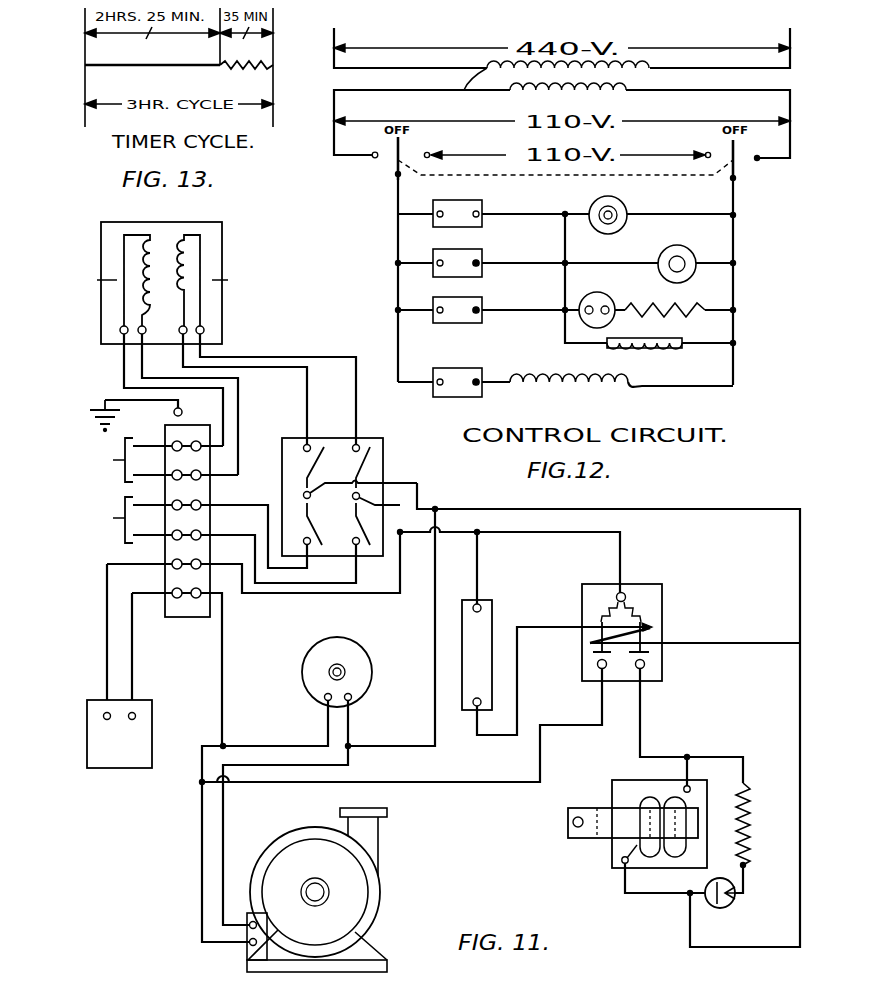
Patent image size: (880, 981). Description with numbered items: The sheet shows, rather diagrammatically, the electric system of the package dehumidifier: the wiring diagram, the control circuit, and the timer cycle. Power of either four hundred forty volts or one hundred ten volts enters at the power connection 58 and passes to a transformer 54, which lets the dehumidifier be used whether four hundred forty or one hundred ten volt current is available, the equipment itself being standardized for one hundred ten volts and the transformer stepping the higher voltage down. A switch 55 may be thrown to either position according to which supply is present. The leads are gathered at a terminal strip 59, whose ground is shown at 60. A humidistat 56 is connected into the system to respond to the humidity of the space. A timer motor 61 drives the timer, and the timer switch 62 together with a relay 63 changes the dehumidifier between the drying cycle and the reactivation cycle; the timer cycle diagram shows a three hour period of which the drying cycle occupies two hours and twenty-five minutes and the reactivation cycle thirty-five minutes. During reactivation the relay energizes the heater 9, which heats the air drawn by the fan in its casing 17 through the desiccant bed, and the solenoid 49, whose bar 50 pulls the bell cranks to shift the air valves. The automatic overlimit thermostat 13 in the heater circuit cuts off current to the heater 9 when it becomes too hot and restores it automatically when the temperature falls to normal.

In FIG. 12, the heater 9 is at (706, 312).
In FIG. 11, the heater 9 is at (746, 785).
In FIG. 12, the automatic overlimit thermostat 13 is at (609, 298).
In FIG. 11, the automatic overlimit thermostat 13 is at (708, 904).
In FIG. 12, the casing 17 is at (692, 252).
In FIG. 11, the casing 17 is at (368, 876).
In FIG. 12, the solenoid 49 is at (653, 350).
In FIG. 11, the solenoid 49 is at (645, 800).
In FIG. 12, the bar 50 is at (684, 340).
In FIG. 11, the bar 50 is at (610, 818).
In FIG. 12, the transformer 54 is at (520, 96).
In FIG. 11, the transformer 54 is at (213, 229).
In FIG. 12, the switch 55 is at (375, 160).
In FIG. 11, the switch 55 is at (366, 470).
In FIG. 12, the humidistat 56 is at (484, 208).
In FIG. 11, the humidistat 56 is at (97, 756).
In FIG. 11, the power connection 58 is at (47, 462).
In FIG. 11, the terminal strip 59 is at (210, 618).
In FIG. 11, the ground 60 is at (88, 411).
In FIG. 12, the timer motor 61 is at (606, 228).
In FIG. 11, the timer motor 61 is at (342, 650).
In FIG. 12, the timer switch 62 is at (481, 369).
In FIG. 11, the timer switch 62 is at (485, 672).
In FIG. 12, the relay 63 is at (486, 298).
In FIG. 11, the relay 63 is at (650, 595).